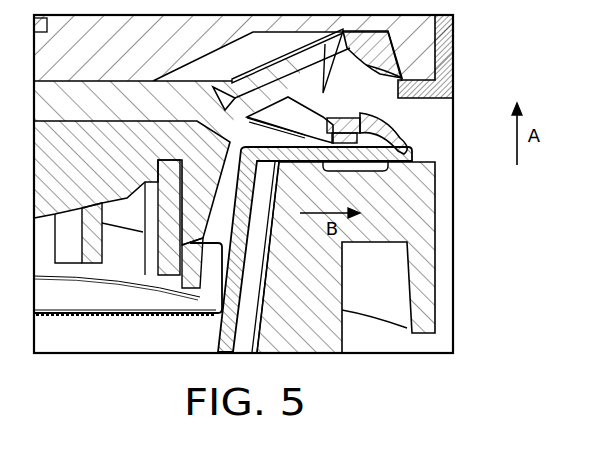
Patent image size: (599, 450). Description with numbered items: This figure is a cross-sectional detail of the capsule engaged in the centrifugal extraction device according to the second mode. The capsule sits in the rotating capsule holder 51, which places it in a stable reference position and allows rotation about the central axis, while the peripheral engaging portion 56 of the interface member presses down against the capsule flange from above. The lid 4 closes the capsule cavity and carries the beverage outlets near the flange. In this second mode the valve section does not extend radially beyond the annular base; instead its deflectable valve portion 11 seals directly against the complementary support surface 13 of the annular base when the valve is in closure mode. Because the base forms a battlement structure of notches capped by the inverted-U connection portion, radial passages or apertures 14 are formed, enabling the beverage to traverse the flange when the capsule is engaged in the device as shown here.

The lid 4 is at (128, 318).
The deflectable valve portion 11 is at (397, 140).
The complementary support surface 13 is at (407, 157).
The radial passages or apertures 14 is at (303, 130).
The rotating capsule holder 51 is at (382, 331).
The peripheral engaging portion 56 is at (357, 82).